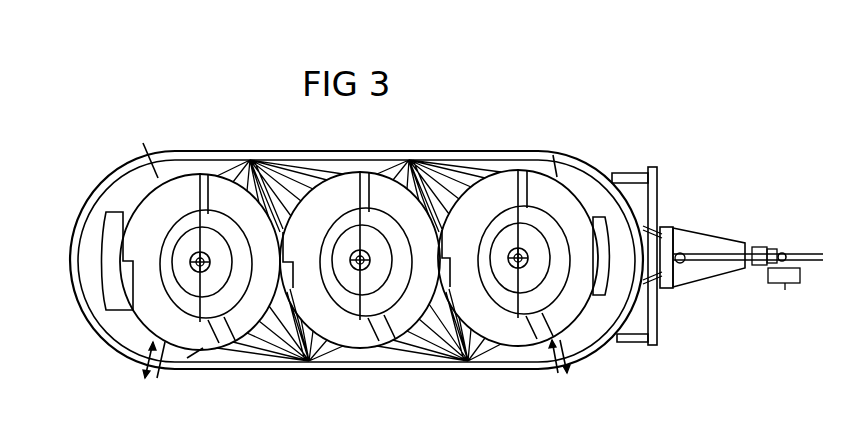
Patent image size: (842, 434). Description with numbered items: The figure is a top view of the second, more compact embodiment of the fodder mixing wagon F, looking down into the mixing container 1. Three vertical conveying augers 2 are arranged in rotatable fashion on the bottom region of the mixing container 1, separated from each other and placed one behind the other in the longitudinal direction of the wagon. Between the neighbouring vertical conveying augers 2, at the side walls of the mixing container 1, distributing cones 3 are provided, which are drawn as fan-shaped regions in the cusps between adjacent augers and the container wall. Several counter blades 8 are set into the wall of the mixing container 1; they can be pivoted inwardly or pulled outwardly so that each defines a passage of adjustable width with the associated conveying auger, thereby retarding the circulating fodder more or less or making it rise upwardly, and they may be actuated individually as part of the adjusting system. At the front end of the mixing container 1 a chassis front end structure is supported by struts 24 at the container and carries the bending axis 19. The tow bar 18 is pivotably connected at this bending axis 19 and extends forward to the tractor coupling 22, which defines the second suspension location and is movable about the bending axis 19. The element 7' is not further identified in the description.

The mixing container 1 is at (595, 167).
The vertical conveying augers 2 is at (505, 222).
The distributing cones 3 is at (450, 182).
The stator sleeve 7' is at (374, 282).
The counter blades 8 is at (150, 153).
The tow bar 18 is at (700, 243).
The bending axis 19 is at (660, 230).
The tractor coupling 22 is at (785, 252).
The struts 24 is at (660, 325).
The fodder mixing wagon F is at (642, 155).